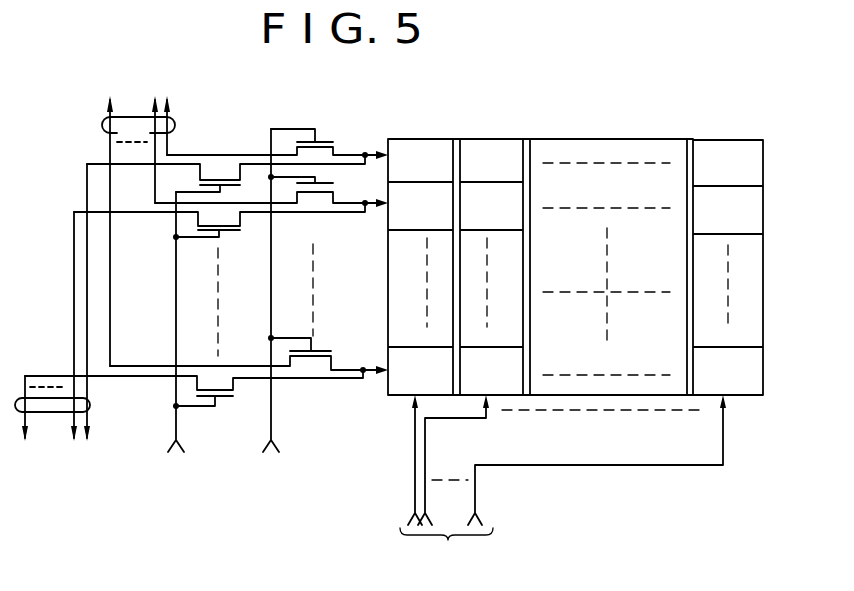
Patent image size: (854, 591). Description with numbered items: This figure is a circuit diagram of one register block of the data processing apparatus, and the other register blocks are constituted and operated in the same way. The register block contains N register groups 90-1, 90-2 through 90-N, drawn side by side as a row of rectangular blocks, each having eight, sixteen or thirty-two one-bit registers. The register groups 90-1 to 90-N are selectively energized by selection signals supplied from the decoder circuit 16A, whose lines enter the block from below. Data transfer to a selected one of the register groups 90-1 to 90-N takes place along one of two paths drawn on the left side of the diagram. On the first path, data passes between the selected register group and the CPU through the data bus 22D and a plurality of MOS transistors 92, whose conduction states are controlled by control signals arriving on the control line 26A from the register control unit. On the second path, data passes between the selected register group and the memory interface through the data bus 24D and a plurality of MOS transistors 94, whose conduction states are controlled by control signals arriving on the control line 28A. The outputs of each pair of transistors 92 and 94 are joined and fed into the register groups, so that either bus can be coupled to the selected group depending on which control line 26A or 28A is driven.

The data bus 24D is at (176, 125).
The data bus 22D is at (45, 416).
The MOS transistors 92 is at (231, 172).
The MOS transistors 94 is at (342, 143).
The control line 26A is at (202, 341).
The control line 28A is at (298, 309).
The register group 90-1 is at (413, 139).
The register group 90-2 is at (487, 139).
The register group 90-N is at (720, 140).
The decoder circuit 16A is at (554, 483).